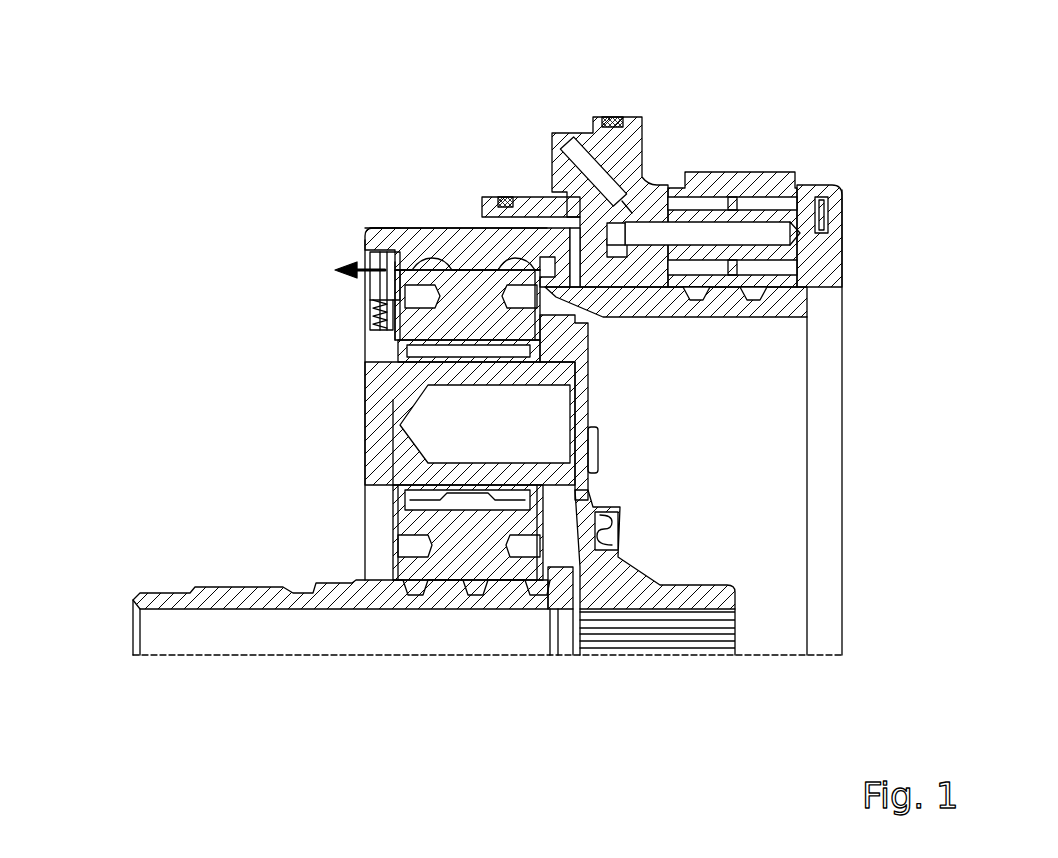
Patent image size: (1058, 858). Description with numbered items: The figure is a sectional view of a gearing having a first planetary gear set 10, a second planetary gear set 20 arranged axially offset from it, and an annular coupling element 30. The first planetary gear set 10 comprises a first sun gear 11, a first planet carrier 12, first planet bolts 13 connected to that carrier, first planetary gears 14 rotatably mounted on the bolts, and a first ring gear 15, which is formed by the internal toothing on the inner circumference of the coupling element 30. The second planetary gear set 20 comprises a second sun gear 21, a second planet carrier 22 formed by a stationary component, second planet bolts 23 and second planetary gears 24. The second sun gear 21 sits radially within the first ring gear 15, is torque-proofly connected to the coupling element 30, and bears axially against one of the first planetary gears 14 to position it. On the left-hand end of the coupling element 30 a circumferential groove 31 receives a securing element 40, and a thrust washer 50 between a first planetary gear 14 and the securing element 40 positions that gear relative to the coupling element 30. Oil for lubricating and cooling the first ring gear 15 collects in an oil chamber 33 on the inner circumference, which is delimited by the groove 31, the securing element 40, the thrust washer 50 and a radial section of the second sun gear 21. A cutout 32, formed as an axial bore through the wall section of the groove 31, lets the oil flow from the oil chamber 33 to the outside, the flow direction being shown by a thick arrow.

The first planetary gear set 10 is at (334, 418).
The first sun gear 11 is at (372, 580).
The first planet carrier 12 is at (595, 507).
The first planet bolts 13 is at (408, 468).
The first planetary gears 14 is at (468, 262).
The first ring gear 15 is at (525, 247).
The second planetary gear set 20 is at (858, 295).
The second sun gear 21 is at (750, 307).
The second planet carrier 22 is at (655, 317).
The second planet bolts 23 is at (800, 232).
The second planetary gears 24 is at (722, 187).
The coupling element 30 is at (340, 164).
The circumferential groove 31 is at (398, 228).
The cutout 32 is at (375, 262).
The oil chamber 33 is at (440, 252).
The securing element 40 is at (362, 236).
The thrust washer 50 is at (378, 325).